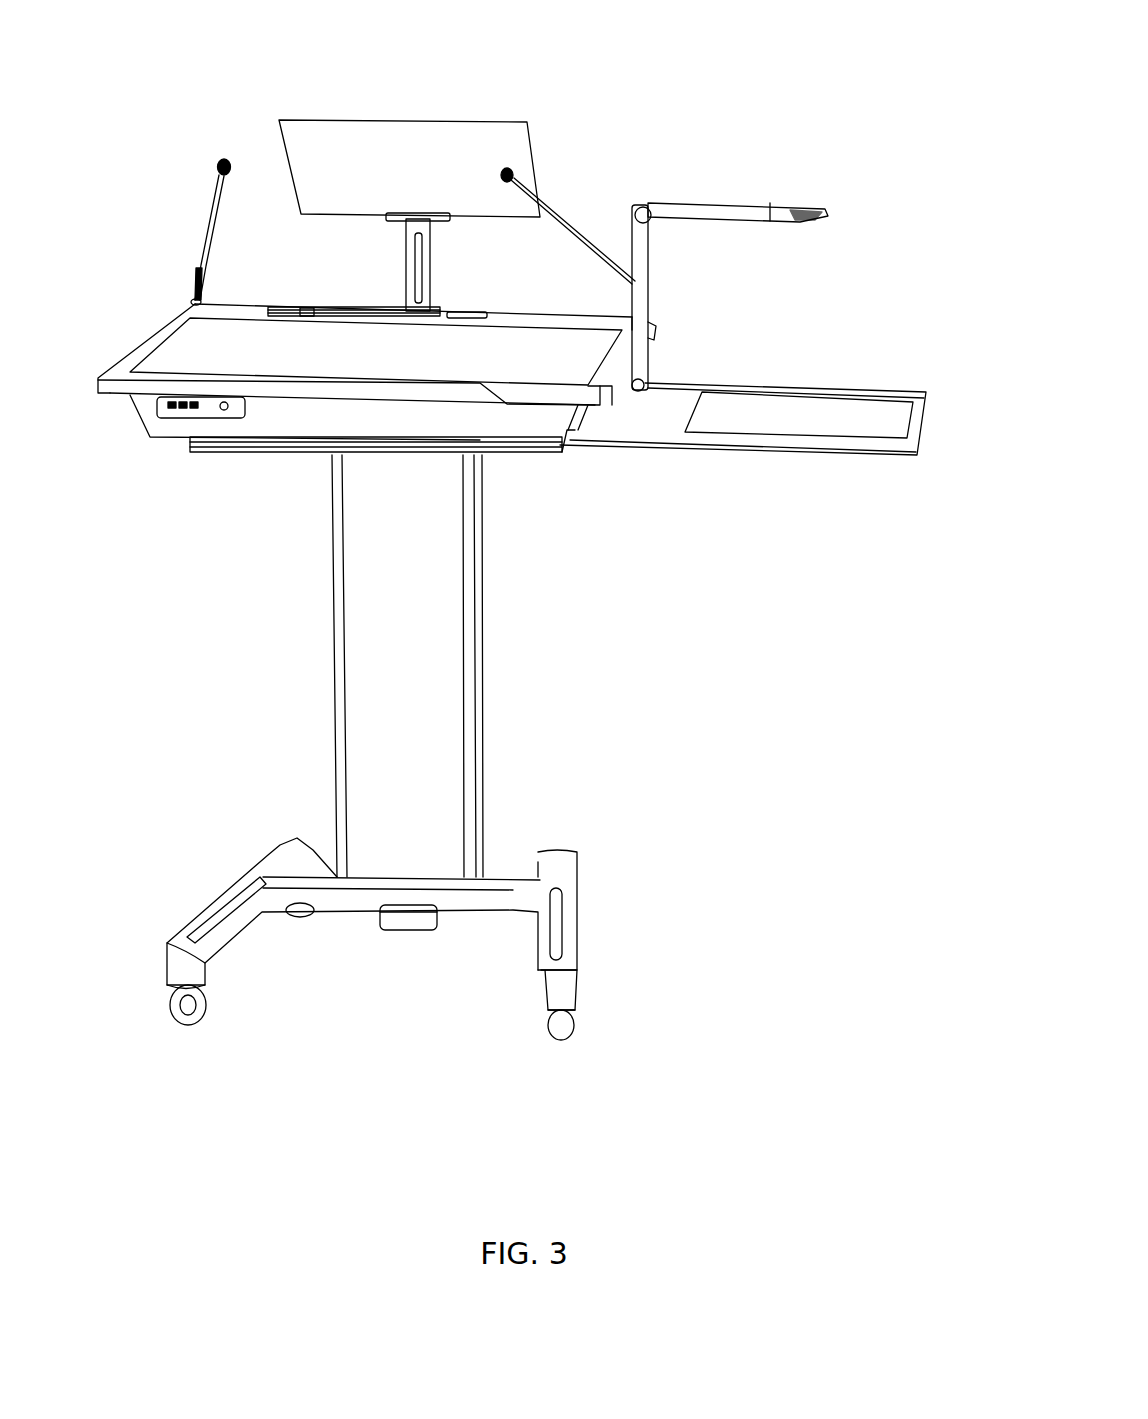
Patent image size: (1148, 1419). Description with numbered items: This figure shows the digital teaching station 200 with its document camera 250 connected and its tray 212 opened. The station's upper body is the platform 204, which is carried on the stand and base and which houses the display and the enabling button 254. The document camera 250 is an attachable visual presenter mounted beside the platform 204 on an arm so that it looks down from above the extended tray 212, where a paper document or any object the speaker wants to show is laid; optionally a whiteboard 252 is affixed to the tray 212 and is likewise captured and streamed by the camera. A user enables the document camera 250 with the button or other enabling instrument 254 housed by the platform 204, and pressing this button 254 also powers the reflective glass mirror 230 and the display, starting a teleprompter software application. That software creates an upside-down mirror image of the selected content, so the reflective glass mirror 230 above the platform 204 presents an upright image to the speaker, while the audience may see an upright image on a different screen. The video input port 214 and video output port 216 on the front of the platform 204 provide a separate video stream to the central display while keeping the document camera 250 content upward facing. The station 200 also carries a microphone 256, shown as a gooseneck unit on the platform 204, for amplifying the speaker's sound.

The digital teaching station 200 is at (340, 58).
The platform 204 is at (531, 422).
The tray 212 is at (630, 421).
The video input port 214 is at (228, 407).
The video output port 216 is at (210, 405).
The reflective glass mirror 230 is at (462, 135).
The document camera 250 is at (685, 205).
The whiteboard 252 is at (820, 400).
The enabling button 254 is at (490, 312).
The microphone 256 is at (205, 247).